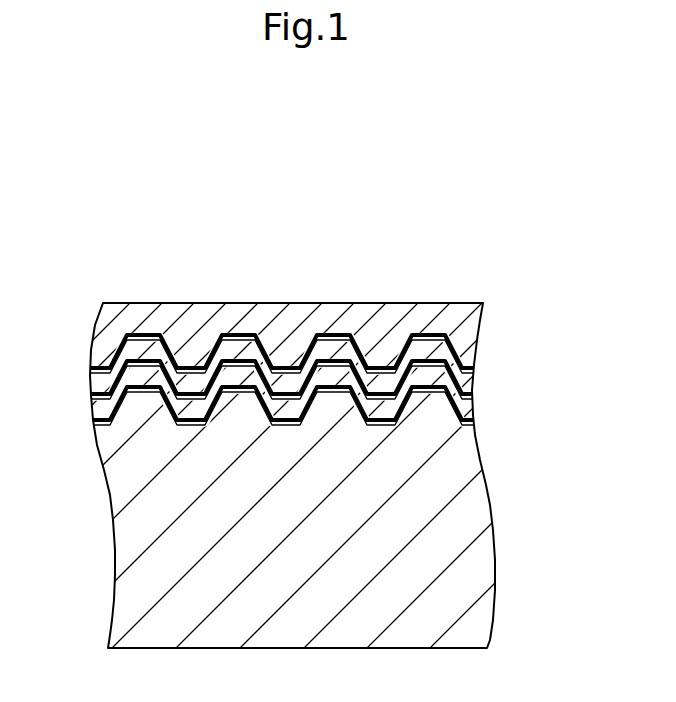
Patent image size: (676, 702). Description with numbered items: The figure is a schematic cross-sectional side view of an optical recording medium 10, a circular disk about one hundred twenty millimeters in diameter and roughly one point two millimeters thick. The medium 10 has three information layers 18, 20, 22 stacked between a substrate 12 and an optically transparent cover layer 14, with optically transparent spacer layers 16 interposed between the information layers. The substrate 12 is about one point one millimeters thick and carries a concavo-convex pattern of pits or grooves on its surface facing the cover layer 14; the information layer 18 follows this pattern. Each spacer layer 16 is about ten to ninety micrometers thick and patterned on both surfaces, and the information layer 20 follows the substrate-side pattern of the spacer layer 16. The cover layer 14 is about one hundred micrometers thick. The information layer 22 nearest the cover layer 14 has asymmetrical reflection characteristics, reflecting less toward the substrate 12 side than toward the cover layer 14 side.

The optical recording medium 10 is at (302, 251).
The substrate 12 is at (493, 507).
The cover layer 14 is at (483, 323).
The spacer layer 16 is at (92, 377).
The information layer 18 is at (475, 419).
The information layer 20 is at (473, 393).
The information layer 22 is at (474, 369).